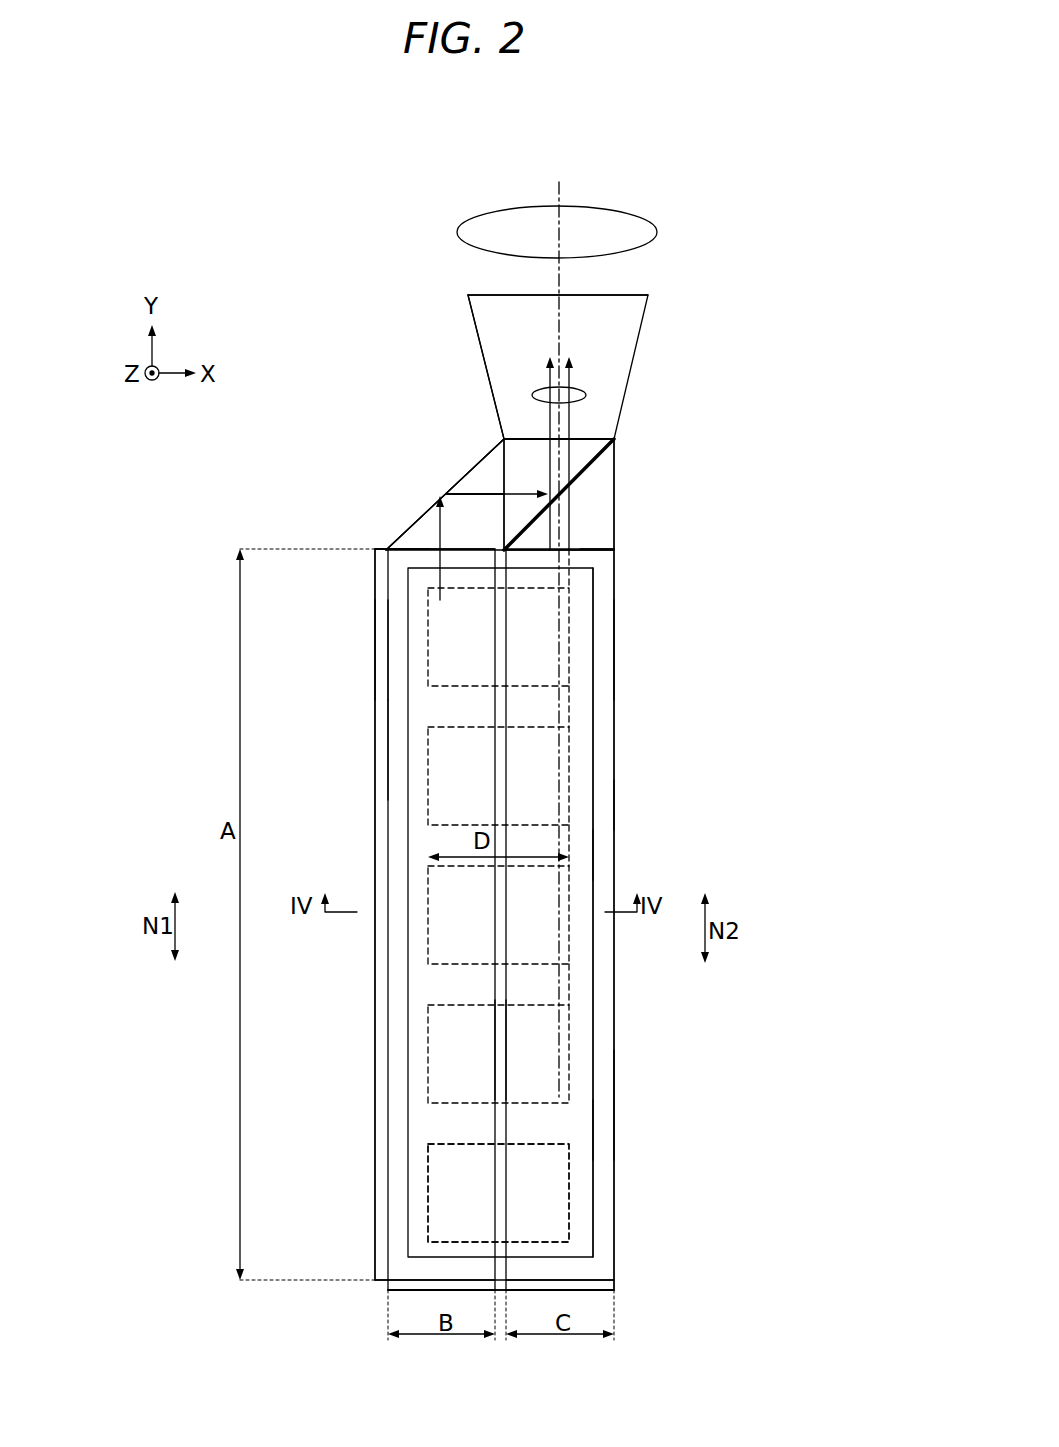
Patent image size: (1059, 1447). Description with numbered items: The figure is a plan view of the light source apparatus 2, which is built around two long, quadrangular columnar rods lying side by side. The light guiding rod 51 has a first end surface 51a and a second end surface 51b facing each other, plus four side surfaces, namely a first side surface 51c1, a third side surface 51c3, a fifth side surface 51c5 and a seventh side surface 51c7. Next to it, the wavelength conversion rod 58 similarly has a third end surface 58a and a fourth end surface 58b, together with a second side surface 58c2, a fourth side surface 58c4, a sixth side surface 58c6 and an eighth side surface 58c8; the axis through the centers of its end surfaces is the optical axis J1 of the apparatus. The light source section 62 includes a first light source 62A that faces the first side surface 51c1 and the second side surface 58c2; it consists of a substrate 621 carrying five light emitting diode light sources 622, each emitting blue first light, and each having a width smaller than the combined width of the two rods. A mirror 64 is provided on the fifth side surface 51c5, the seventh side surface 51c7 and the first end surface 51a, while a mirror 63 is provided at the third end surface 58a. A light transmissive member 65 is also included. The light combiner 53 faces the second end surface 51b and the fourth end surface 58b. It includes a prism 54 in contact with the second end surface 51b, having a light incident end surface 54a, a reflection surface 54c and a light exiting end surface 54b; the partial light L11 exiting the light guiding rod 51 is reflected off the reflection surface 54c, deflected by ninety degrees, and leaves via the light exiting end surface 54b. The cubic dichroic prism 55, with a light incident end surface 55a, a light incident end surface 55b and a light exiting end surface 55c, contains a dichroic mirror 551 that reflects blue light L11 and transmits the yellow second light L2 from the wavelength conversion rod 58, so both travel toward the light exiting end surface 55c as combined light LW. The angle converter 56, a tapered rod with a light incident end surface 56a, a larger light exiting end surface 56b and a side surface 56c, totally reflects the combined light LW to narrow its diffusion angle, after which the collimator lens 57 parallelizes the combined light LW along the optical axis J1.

The light source apparatus 2 is at (696, 148).
The collimator lens 57 is at (470, 224).
The optical axis J1 is at (562, 192).
The angle converter 56 is at (628, 372).
The light incident end surface 56a is at (500, 440).
The light exiting end surface 56b is at (632, 295).
The side surface 56c is at (484, 398).
The combined light LW is at (533, 395).
The dichroic prism 55 is at (604, 506).
The light incident end surface 55a is at (497, 527).
The light incident end surface 55b is at (607, 560).
The light exiting end surface 55c is at (605, 420).
The dichroic mirror 551 is at (603, 465).
The second light L2 is at (588, 497).
The partial light of the first light L11 is at (437, 592).
The light combiner 53 is at (358, 434).
The prism 54 is at (452, 480).
The light incident end surface 54a is at (380, 561).
The light exiting end surface 54b is at (470, 468).
The reflection surface 54c is at (443, 494).
The light guiding rod 51 is at (383, 790).
The first end surface 51a is at (400, 1292).
The second end surface 51b is at (397, 551).
The first side surface 51c1 is at (392, 665).
The third side surface 51c3 is at (398, 748).
The fifth side surface 51c5 is at (498, 1063).
The seventh side surface 51c7 is at (392, 640).
The light transmissive member 65 is at (408, 853).
The mirror 64 is at (503, 1128).
The wavelength conversion rod 58 is at (618, 745).
The third end surface 58a is at (578, 1290).
The fourth end surface 58b is at (611, 548).
The second side surface 58c2 is at (612, 803).
The fourth side surface 58c4 is at (600, 852).
The sixth side surface 58c6 is at (500, 1040).
The eighth side surface 58c8 is at (612, 632).
The mirror 63 is at (605, 1283).
The light source section 62 is at (692, 912).
The first light source 62A is at (790, 1118).
The substrate 621 is at (583, 1133).
The light emitting diode light source 622 is at (553, 1196).